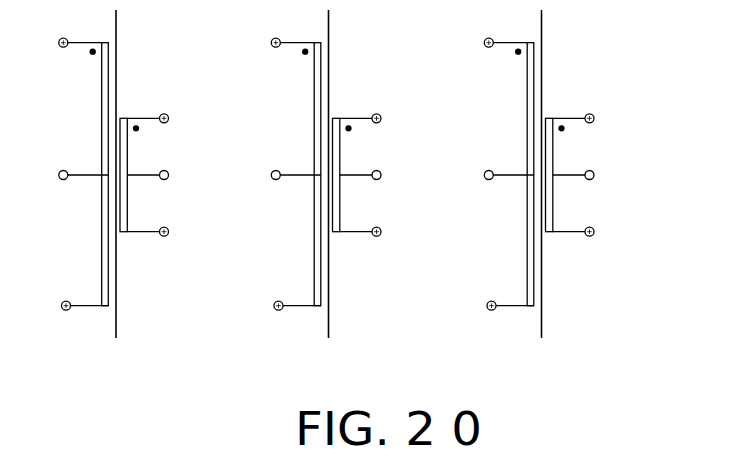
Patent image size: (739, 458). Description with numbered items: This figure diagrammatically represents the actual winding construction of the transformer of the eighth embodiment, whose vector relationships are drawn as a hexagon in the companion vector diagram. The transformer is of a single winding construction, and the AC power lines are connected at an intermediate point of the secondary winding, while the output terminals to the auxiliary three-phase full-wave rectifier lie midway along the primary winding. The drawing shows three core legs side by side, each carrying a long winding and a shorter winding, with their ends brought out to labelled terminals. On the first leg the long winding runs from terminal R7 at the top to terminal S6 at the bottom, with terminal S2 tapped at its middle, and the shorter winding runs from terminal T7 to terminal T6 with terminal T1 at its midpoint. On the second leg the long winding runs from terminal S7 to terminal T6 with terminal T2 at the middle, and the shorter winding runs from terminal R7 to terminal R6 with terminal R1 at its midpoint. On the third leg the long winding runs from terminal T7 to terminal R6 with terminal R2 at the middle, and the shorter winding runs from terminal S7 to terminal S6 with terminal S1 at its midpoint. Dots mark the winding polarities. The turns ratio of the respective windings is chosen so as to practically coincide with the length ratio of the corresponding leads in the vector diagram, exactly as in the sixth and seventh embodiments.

The R-phase winding terminal 7 R7 is at (221, 67).
The S-phase winding terminal 2 S2 is at (80, 161).
The S-phase winding terminal 6 S6 is at (330, 285).
The T-phase winding terminal 7 T7 is at (327, 67).
The T-phase winding terminal 1 T1 is at (168, 176).
The T-phase winding terminal 6 T6 is at (223, 285).
The S-phase winding terminal 7 S7 is at (435, 67).
The T-phase winding terminal 2 T2 is at (293, 161).
The R-phase winding terminal 1 R1 is at (382, 176).
The R-phase winding terminal 6 R6 is at (437, 285).
The R-phase winding terminal 2 R2 is at (506, 161).
The S-phase winding terminal 1 S1 is at (594, 176).